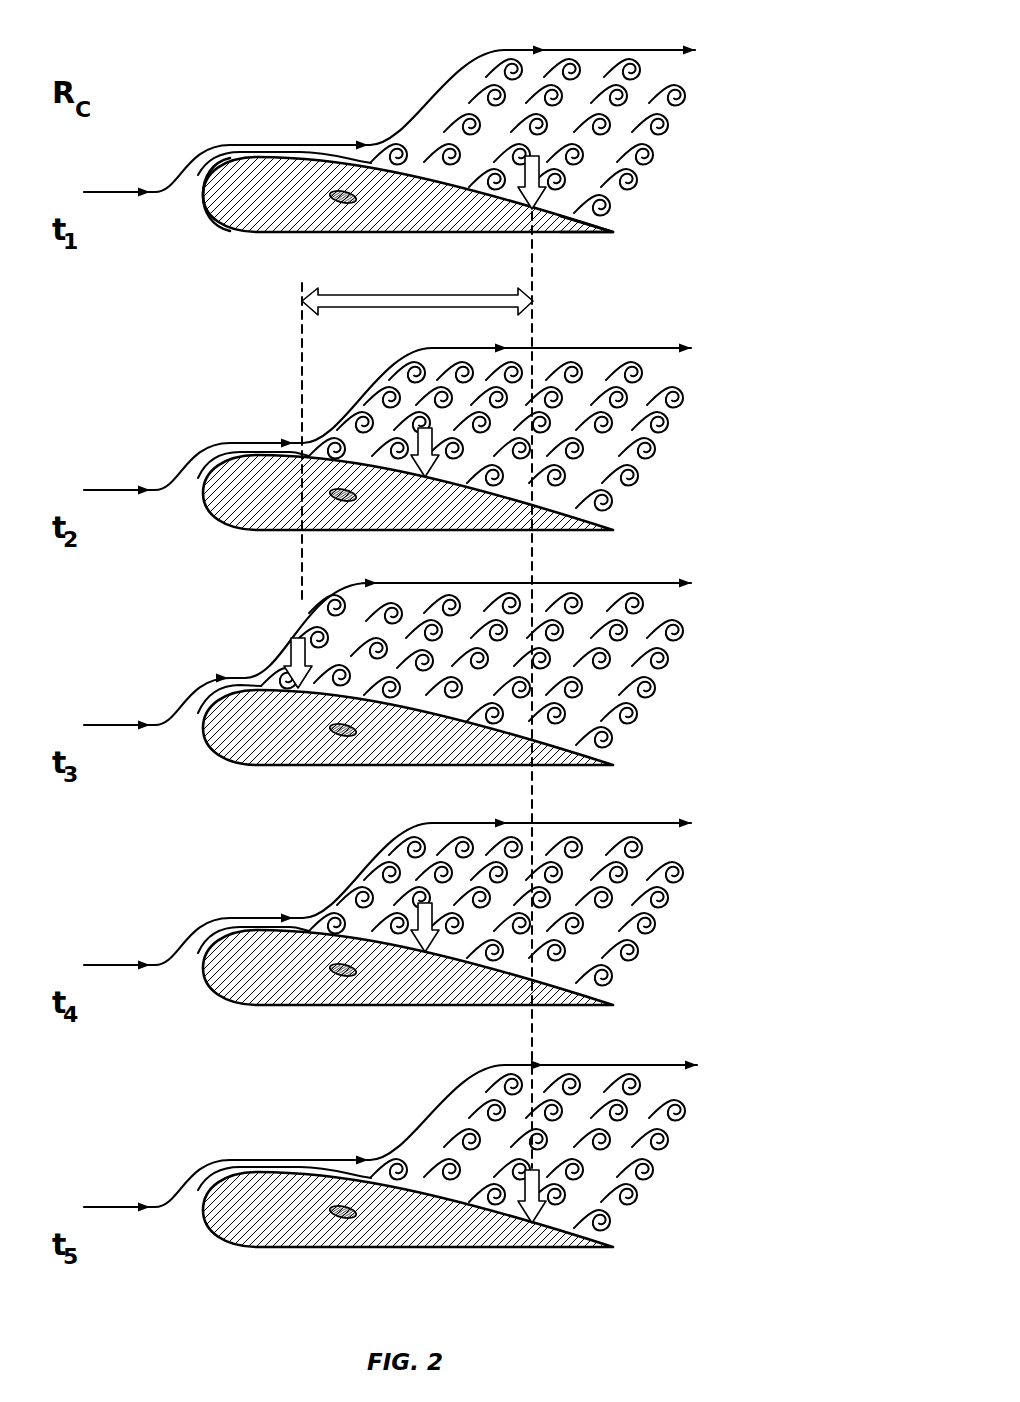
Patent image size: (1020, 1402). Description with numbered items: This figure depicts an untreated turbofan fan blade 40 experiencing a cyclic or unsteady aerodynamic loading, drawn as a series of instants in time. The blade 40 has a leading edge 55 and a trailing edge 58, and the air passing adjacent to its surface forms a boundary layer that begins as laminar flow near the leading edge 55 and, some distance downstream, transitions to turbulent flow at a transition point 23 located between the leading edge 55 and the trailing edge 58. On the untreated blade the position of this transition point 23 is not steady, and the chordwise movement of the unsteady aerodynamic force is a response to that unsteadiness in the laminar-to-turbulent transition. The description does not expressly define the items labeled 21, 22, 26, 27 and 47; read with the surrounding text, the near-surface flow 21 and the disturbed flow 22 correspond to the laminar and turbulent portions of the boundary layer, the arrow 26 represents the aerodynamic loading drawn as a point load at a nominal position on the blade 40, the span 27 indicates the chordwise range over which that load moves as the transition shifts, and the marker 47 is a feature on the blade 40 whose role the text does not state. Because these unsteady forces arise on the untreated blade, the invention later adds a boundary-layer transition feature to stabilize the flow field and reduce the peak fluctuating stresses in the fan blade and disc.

The boundary layer 21 is at (345, 153).
The vortices 22 is at (630, 62).
The transition point 23 is at (443, 87).
The flow separation point 26 is at (443, 689).
The separation point travel range 27 is at (413, 300).
The turbofan blade 40 is at (408, 737).
The flow control actuator 47 is at (341, 676).
The leading edge 55 is at (203, 200).
The trailing edge 58 is at (615, 234).